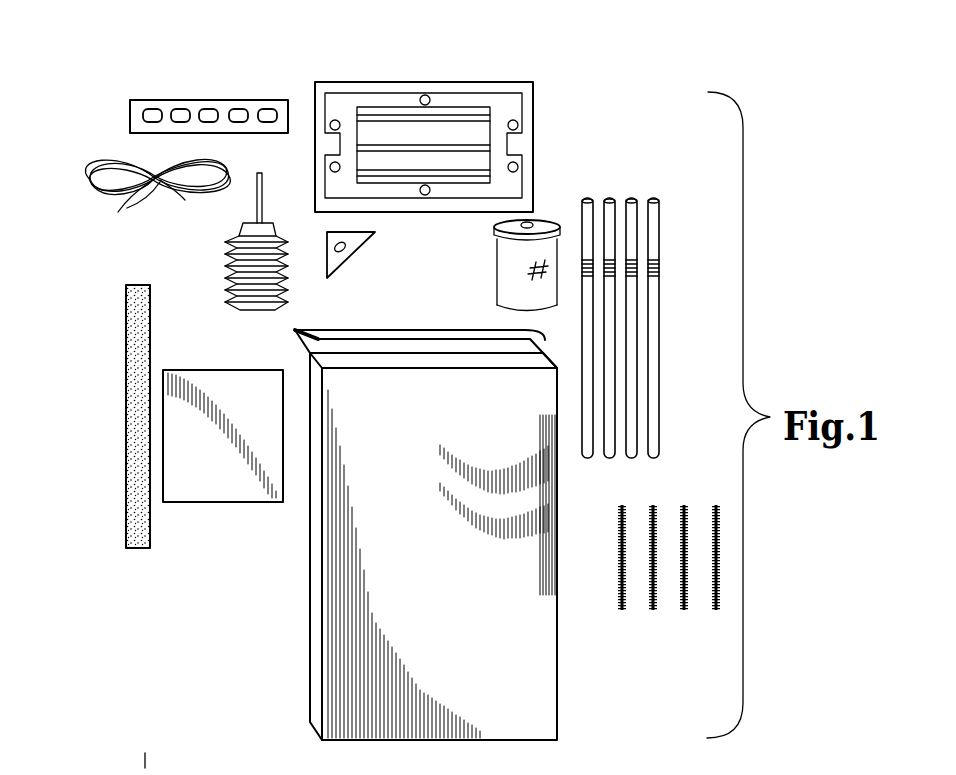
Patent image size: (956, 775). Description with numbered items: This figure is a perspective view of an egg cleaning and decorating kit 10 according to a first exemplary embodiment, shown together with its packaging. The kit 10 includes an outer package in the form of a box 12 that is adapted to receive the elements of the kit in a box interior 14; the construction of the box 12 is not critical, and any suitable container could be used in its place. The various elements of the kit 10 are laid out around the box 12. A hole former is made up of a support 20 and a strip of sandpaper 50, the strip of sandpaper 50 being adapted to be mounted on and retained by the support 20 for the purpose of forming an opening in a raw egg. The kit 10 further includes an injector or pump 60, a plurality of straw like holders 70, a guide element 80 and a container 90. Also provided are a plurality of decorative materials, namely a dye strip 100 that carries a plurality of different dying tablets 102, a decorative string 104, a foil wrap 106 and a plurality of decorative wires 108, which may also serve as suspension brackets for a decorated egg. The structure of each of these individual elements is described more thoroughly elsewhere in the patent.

The egg cleaning and decorating kit 10 is at (640, 80).
The box 12 is at (362, 690).
The box interior 14 is at (487, 356).
The support 20 is at (487, 103).
The strip of sandpaper 50 is at (140, 538).
The injector or pump 60 is at (230, 263).
The straw like holders 70 is at (608, 197).
The guide element 80 is at (350, 253).
The container 90 is at (548, 217).
The dye strip 100 is at (157, 100).
The dying tablets 102 is at (207, 110).
The decorative string 104 is at (122, 193).
The foil wrap 106 is at (242, 485).
The decorative wires 108 is at (653, 610).